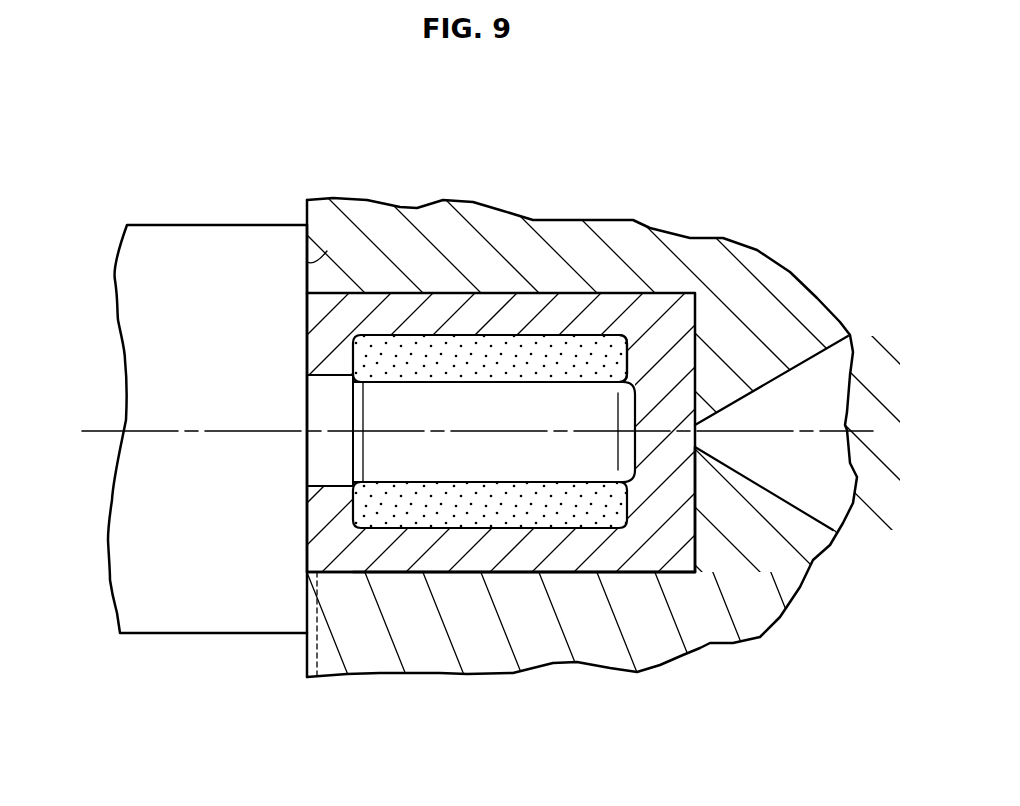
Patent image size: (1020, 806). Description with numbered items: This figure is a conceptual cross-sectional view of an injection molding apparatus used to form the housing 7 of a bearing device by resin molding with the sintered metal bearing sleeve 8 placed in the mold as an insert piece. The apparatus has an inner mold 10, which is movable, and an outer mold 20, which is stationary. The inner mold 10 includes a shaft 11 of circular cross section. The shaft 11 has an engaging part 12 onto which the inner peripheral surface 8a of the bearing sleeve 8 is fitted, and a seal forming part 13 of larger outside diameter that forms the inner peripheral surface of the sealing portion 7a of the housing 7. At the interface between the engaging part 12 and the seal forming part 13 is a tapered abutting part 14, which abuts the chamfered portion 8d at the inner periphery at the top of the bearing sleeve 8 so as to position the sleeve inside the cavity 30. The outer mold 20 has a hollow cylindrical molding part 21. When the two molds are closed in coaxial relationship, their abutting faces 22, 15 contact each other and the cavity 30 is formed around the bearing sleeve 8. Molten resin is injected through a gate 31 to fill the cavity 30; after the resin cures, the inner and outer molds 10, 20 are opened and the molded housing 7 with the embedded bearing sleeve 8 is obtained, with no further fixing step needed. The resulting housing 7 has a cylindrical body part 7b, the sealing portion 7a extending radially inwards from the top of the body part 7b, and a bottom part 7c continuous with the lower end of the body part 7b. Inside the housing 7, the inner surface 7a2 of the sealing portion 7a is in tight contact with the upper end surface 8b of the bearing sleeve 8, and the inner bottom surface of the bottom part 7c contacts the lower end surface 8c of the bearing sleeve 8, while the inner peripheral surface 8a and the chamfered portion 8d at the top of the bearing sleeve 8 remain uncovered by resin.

The housing 7 is at (506, 450).
The cavity 30 is at (608, 306).
The sealing portion 7a is at (320, 505).
The inner surface of the sealing portion 7a2 is at (333, 376).
The cylindrical body part 7b is at (465, 558).
The bottom part 7c is at (697, 450).
The bearing sleeve 8 is at (492, 352).
The inner peripheral surface of the bearing sleeve 8a is at (415, 475).
The upper end surface of the bearing sleeve 8b is at (335, 353).
The lower end surface of the bearing sleeve 8c is at (630, 358).
The chamfered portion 8d is at (400, 384).
The inner mold 10 is at (214, 223).
The shaft 11 is at (344, 456).
The engaging part 12 is at (534, 395).
The seal forming part 13 is at (399, 384).
The tapered abutting part 14 is at (313, 543).
The abutting face 15 is at (310, 263).
The outer mold 20 is at (667, 673).
The hollow cylindrical molding part 21 is at (497, 571).
The abutting face 22 is at (307, 250).
The gate 31 is at (697, 431).